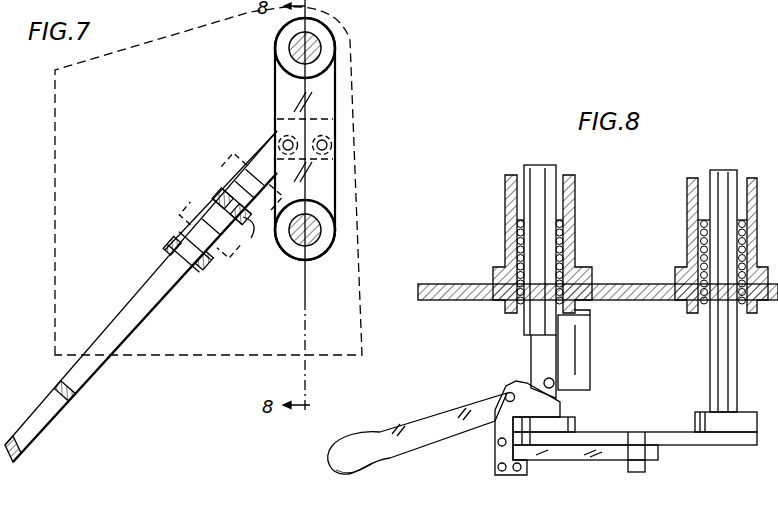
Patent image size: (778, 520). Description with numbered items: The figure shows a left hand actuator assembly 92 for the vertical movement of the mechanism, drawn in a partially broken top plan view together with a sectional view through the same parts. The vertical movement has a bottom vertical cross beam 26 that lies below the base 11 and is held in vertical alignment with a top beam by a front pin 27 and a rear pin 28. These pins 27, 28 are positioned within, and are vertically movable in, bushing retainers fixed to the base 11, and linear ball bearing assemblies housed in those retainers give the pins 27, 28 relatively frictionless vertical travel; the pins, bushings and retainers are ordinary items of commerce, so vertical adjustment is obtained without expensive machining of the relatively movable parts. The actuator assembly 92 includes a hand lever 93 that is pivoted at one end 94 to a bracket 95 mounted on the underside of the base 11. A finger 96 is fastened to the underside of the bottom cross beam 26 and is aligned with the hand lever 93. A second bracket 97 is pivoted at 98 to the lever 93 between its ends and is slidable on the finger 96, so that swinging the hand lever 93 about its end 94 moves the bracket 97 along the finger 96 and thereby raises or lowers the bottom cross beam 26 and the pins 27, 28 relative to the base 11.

In FIG. 7, the base 11 is at (55, 184).
In FIG. 8, the base 11 is at (626, 284).
In FIG. 7, the bottom vertical cross beam 26 is at (333, 98).
In FIG. 8, the bottom vertical cross beam 26 is at (663, 432).
In FIG. 7, the front pin 27 is at (315, 228).
In FIG. 8, the front pin 27 is at (540, 166).
In FIG. 7, the rear pin 28 is at (312, 46).
In FIG. 8, the rear pin 28 is at (722, 172).
In FIG. 7, the left hand actuator assembly 92 is at (123, 366).
In FIG. 8, the left hand actuator assembly 92 is at (446, 462).
In FIG. 7, the hand lever 93 is at (36, 441).
In FIG. 8, the hand lever 93 is at (348, 472).
In FIG. 7, the end 94 is at (247, 232).
In FIG. 8, the end 94 is at (543, 380).
In FIG. 7, the bracket 95 is at (225, 186).
In FIG. 8, the bracket 95 is at (590, 364).
In FIG. 7, the finger 96 is at (256, 147).
In FIG. 8, the finger 96 is at (585, 456).
In FIG. 7, the bracket 97 is at (167, 255).
In FIG. 8, the bracket 97 is at (494, 452).
In FIG. 7, the pivot 98 is at (207, 262).
In FIG. 8, the pivot 98 is at (505, 396).